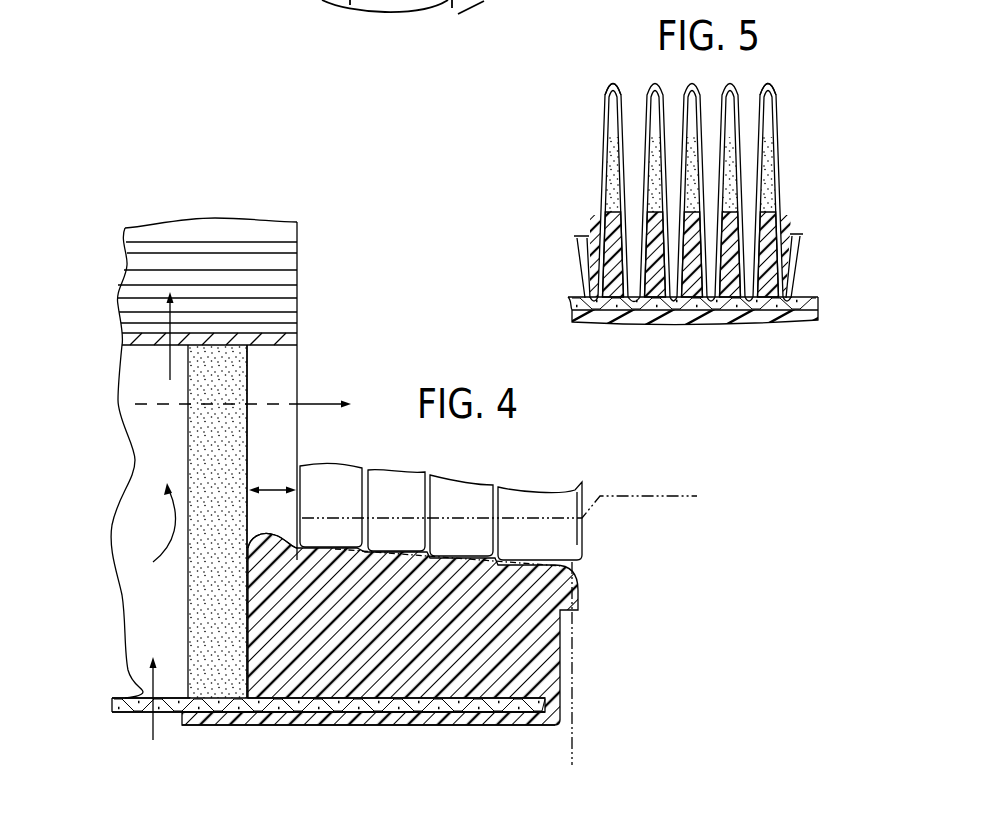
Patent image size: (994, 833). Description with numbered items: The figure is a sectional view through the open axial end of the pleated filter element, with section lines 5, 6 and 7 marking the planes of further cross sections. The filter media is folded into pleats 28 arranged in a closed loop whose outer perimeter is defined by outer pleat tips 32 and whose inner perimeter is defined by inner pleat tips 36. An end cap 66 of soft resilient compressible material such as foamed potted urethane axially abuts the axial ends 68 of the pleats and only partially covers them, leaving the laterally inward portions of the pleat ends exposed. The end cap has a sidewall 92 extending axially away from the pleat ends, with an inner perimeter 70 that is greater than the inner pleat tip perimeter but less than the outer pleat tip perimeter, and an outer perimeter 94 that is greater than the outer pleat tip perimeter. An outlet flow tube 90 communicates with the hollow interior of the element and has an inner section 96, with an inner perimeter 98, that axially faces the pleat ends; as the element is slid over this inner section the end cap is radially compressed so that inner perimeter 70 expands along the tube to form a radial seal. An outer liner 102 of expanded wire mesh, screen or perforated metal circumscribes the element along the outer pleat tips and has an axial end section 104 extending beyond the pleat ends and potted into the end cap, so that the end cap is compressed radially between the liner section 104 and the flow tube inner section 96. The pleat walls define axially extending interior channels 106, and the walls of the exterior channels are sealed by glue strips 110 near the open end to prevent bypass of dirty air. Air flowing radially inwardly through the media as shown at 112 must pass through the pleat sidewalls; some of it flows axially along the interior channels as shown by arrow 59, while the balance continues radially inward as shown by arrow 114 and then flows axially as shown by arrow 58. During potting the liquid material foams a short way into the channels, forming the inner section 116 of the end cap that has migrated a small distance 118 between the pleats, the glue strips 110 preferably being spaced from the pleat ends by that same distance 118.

In FIG. 4, the section line 5— 5 is at (285, 178).
In FIG. 4, the section line 6— 6 is at (185, 182).
In FIG. 4, the section line 7— 7 is at (108, 180).
In FIG. 4, the pleats 28 is at (135, 457).
In FIG. 5, the pleats 28 is at (778, 115).
In FIG. 4, the outer pleat tips 32 is at (122, 700).
In FIG. 5, the outer pleat tips 32 is at (793, 295).
In FIG. 4, the inner pleat tips 36 is at (133, 337).
In FIG. 5, the inner pleat tips 36 is at (770, 84).
In FIG. 4, the arrow 58 is at (277, 282).
In FIG. 4, the arrow 59 is at (312, 403).
In FIG. 4, the end cap 66 is at (562, 668).
In FIG. 5, the end cap 66 is at (765, 225).
In FIG. 4, the axial ends of the pleats 68 is at (297, 453).
In FIG. 4, the inner perimeter 70 is at (283, 548).
In FIG. 4, the outlet flow tube 90 is at (498, 510).
In FIG. 4, the sidewall 92 is at (553, 625).
In FIG. 4, the outer perimeter 94 is at (505, 727).
In FIG. 5, the outer perimeter 94 is at (770, 323).
In FIG. 4, the inner section 96 is at (305, 515).
In FIG. 4, the inner perimeter 98 is at (385, 516).
In FIG. 4, the outer liner 102 is at (115, 705).
In FIG. 4, the axial end section 104 is at (447, 712).
In FIG. 5, the axial end section 104 is at (813, 300).
In FIG. 5, the interior channels 106 is at (635, 106).
In FIG. 4, the glue strips 110 is at (200, 554).
In FIG. 5, the glue strips 110 is at (772, 178).
In FIG. 4, the radially inward flow 112 is at (127, 678).
In FIG. 4, the arrow 114 is at (170, 362).
In FIG. 4, the inner section 116 is at (260, 600).
In FIG. 4, the distance 118 is at (270, 489).